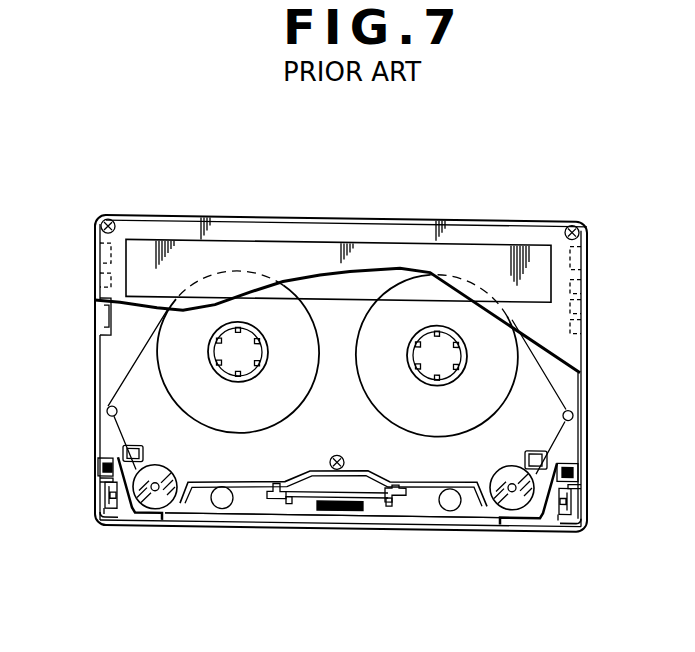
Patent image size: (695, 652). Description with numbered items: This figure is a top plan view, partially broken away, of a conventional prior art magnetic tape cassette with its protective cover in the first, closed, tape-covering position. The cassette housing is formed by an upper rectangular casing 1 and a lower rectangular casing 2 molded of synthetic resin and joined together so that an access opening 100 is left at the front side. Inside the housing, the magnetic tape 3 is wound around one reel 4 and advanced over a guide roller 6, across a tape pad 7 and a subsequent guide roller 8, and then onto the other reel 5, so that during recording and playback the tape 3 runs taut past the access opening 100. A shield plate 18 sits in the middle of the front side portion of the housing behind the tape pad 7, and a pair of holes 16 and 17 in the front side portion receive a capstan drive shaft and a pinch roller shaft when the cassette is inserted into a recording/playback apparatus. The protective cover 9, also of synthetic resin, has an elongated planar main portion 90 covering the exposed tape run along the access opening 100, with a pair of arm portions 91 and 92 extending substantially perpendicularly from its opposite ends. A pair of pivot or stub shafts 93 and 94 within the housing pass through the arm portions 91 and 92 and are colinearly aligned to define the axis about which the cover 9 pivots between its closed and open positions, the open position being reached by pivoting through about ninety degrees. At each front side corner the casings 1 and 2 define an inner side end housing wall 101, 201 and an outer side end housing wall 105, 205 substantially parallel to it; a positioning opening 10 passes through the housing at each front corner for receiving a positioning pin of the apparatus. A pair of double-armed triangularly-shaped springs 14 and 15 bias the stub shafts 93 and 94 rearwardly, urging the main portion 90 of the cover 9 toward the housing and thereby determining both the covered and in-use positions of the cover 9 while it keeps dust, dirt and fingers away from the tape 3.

The upper rectangular casing 1 is at (577, 340).
The lower rectangular casing 2 is at (587, 410).
The magnetic tape 3 is at (312, 388).
The reel 4 is at (208, 350).
The reel 5 is at (467, 362).
The guide roller 6 is at (152, 508).
The tape pad 7 is at (347, 507).
The guide roller 8 is at (515, 504).
The protective cover 9 is at (488, 530).
The positioning opening 10 is at (100, 460).
The double-armed triangularly-shaped spring 14 is at (110, 490).
The double-armed triangularly-shaped spring 15 is at (560, 512).
The hole 16 is at (227, 507).
The hole 17 is at (448, 506).
The shield plate 18 is at (315, 484).
The main portion 90 is at (400, 520).
The arm portion 91 is at (98, 481).
The arm portion 92 is at (580, 487).
The pivot shaft 93 is at (110, 497).
The pivot shaft 94 is at (580, 482).
The access opening 100 is at (277, 512).
The inner side end housing wall 101 is at (617, 582).
The outer side end housing wall 105 is at (602, 528).
The inner side end housing wall 201 is at (356, 542).
The outer side end housing wall 205 is at (345, 540).